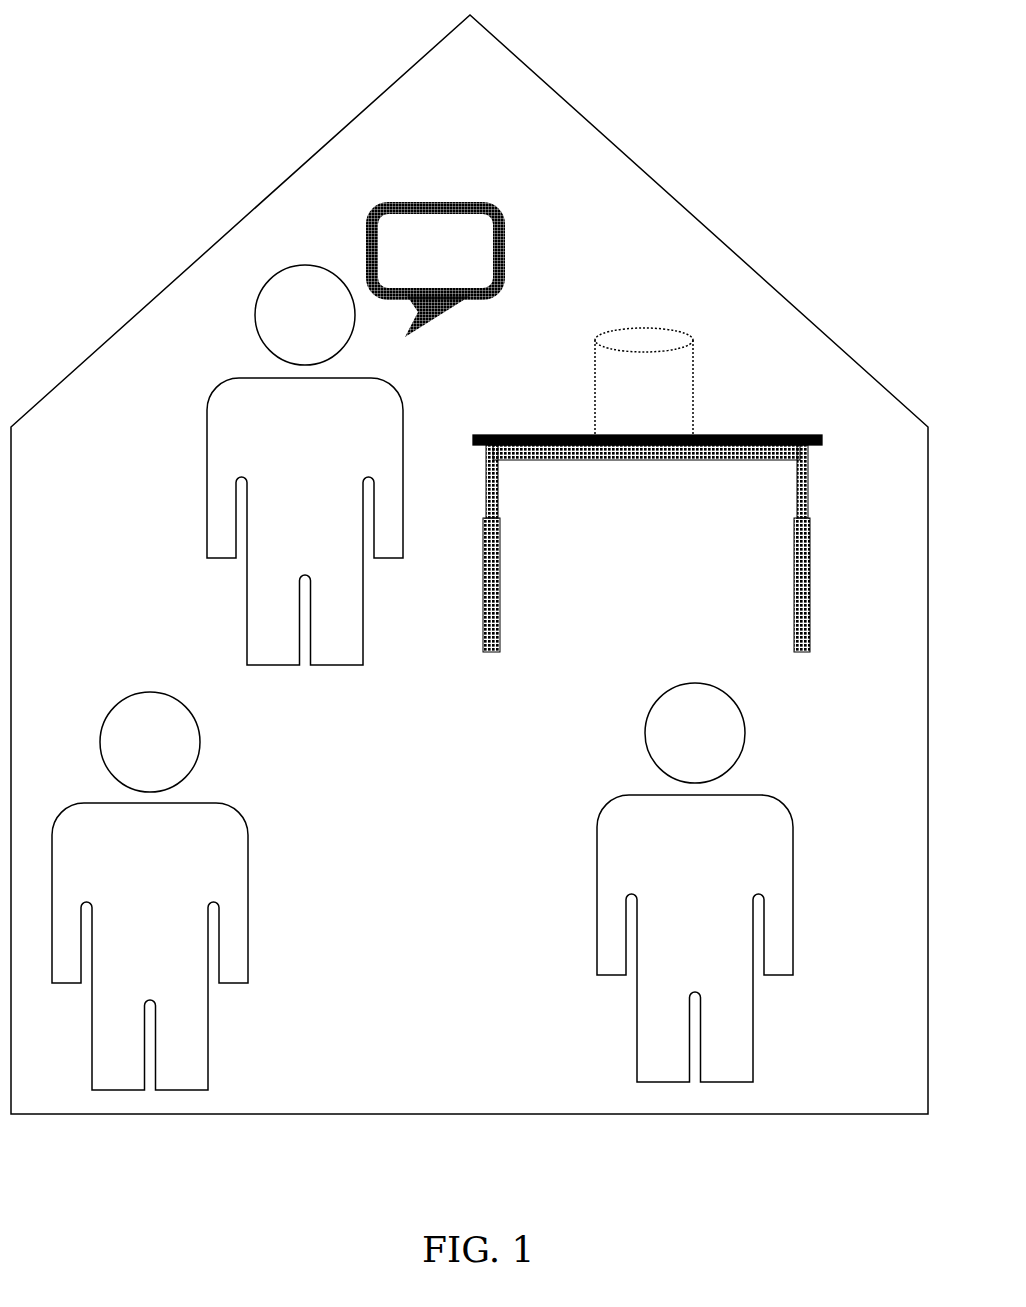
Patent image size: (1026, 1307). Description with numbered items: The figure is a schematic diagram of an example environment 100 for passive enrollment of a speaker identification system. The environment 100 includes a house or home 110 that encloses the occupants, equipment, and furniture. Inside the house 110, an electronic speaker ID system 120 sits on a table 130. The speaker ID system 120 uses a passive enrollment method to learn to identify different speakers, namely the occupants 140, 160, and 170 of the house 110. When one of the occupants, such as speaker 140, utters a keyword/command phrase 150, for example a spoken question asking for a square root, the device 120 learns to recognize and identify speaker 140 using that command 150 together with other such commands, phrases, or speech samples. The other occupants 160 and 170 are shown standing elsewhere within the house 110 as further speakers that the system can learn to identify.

The environment 100 is at (140, 42).
The house 110 is at (685, 210).
The speaker ID system 120 is at (653, 327).
The table 130 is at (775, 435).
The occupant 140 is at (227, 380).
The keyword/command phrase 150 is at (460, 202).
The occupant 160 is at (773, 800).
The occupant 170 is at (230, 810).